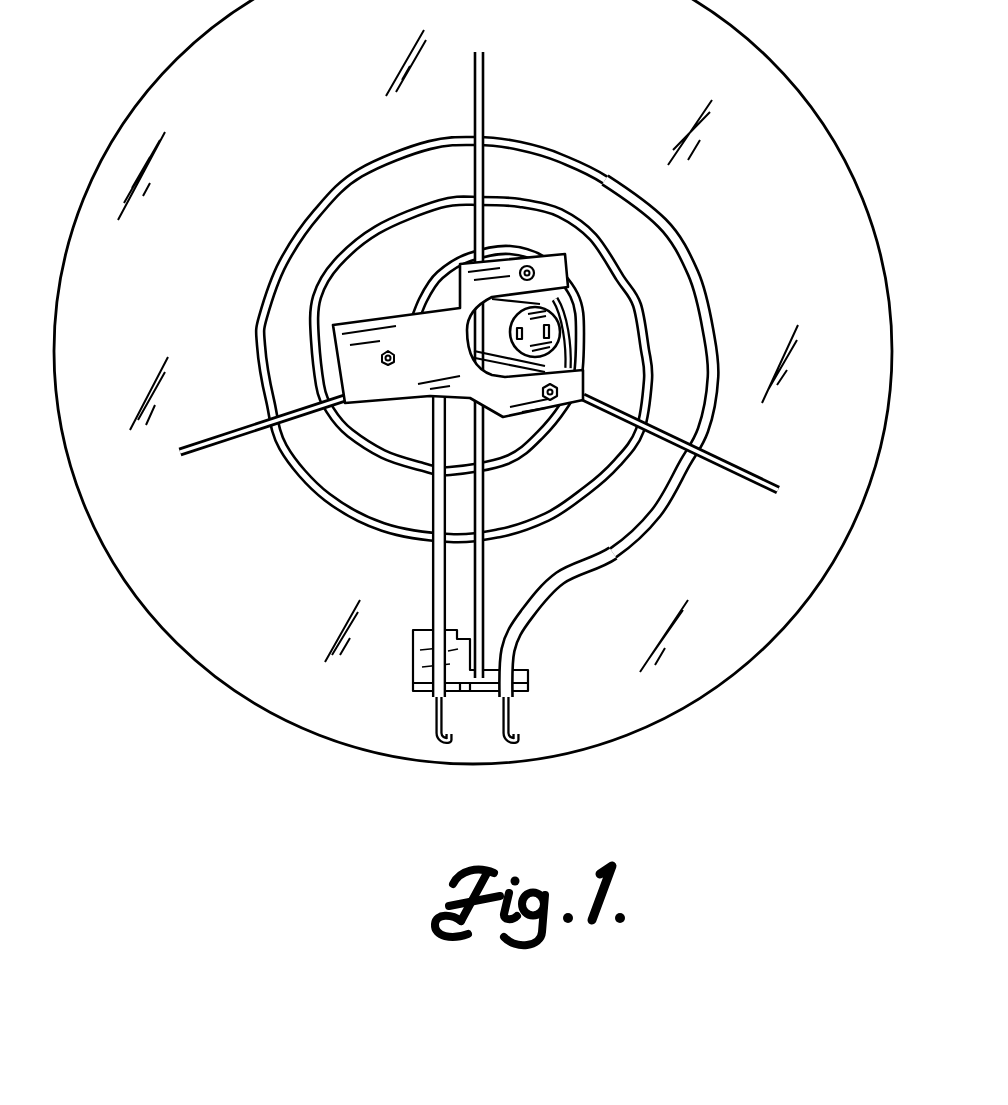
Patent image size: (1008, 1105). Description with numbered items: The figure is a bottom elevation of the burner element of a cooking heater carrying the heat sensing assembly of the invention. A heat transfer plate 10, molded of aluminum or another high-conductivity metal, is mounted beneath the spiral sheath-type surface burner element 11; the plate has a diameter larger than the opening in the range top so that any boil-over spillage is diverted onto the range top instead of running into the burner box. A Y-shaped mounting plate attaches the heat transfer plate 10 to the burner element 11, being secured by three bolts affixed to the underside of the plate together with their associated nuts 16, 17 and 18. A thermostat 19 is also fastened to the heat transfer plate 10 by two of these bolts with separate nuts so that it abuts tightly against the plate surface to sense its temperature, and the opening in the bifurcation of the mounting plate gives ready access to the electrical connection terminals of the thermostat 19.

The heat transfer plate 10 is at (762, 65).
The burner element 11 is at (537, 150).
The nut 16 is at (388, 352).
The nut 17 is at (527, 266).
The nut 18 is at (556, 402).
The thermostat 19 is at (553, 330).